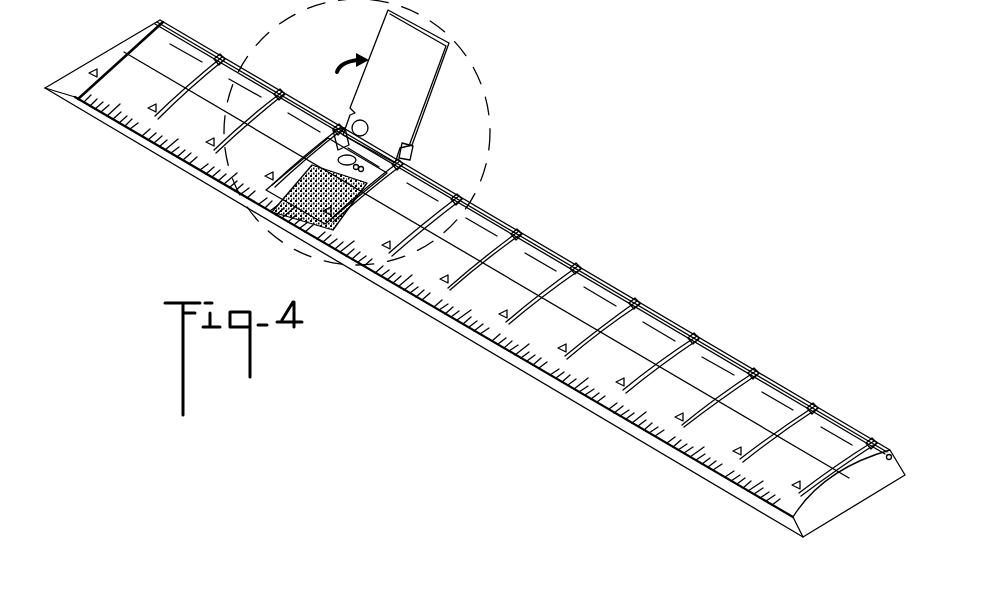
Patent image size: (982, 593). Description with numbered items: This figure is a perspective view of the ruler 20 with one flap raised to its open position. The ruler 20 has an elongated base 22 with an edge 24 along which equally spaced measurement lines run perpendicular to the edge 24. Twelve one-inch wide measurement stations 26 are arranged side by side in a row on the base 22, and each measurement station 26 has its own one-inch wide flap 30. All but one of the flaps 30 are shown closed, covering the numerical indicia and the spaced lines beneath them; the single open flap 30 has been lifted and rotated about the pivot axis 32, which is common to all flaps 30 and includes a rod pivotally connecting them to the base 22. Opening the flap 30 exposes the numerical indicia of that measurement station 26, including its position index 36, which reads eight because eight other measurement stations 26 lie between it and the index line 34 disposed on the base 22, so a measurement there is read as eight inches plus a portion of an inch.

The ruler 20 is at (551, 180).
The elongated base 22 is at (107, 60).
The edge 24 is at (557, 388).
The one-inch wide measurement station 26 is at (372, 176).
The flap 30 is at (390, 64).
The pivot axis 32 is at (217, 61).
The index line 34 is at (772, 510).
The position index 36 is at (340, 128).